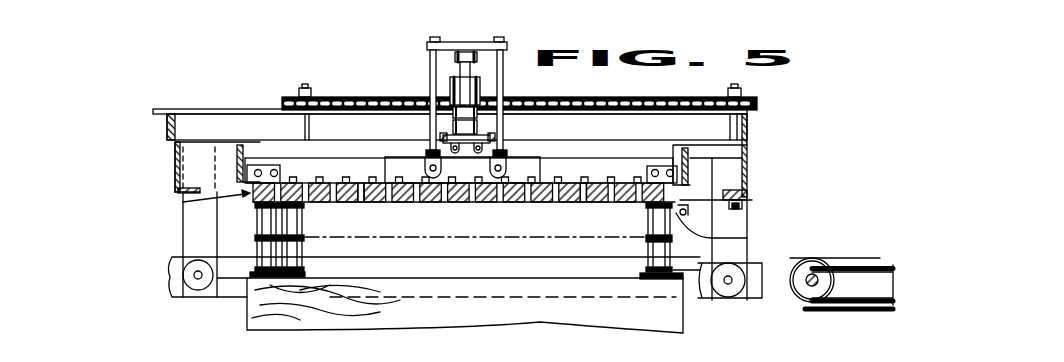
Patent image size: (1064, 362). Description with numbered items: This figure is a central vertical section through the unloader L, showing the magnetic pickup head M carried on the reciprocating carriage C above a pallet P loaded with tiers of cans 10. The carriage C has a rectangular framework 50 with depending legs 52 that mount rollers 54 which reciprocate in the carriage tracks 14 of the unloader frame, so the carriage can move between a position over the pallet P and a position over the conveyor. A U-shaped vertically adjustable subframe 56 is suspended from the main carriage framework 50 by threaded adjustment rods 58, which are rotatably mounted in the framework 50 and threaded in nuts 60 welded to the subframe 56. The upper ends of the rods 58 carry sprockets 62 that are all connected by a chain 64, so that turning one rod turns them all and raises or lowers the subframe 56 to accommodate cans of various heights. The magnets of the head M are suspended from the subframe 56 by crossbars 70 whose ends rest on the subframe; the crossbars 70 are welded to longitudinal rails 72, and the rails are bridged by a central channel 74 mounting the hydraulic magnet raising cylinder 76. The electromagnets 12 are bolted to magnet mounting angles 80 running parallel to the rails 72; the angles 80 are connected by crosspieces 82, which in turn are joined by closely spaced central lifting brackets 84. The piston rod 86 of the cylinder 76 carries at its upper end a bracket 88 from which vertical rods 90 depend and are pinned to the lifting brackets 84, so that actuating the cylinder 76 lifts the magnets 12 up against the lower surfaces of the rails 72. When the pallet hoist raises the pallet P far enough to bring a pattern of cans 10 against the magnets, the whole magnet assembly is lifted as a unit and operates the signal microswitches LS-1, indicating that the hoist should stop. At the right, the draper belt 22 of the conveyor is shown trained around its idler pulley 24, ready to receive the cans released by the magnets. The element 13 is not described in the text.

The unloader L is at (125, 85).
The carriage C is at (158, 127).
The rectangular framework 50 is at (217, 106).
The sprockets 62 is at (300, 87).
The threaded adjustment rods 58 is at (309, 125).
The crossbars 70 is at (177, 165).
The magnetic pickup head M is at (215, 198).
The depending legs 52 is at (183, 232).
The rollers 54 is at (196, 260).
The carriage tracks 14 is at (168, 277).
The pallet P is at (247, 320).
The piston rod 86 is at (473, 64).
The bracket 88 is at (427, 40).
The vertical rods 90 is at (430, 62).
The hydraulic magnet raising cylinder 76 is at (450, 90).
The central lifting brackets 84 is at (406, 158).
The central channel 74 is at (493, 138).
The magnet mounting angles 80 is at (575, 180).
The longitudinal rails 72 is at (618, 158).
The chain 64 is at (591, 97).
The vertically adjustable subframe 56 is at (705, 160).
The nuts 60 is at (743, 206).
The crosspieces 82 is at (361, 183).
The electromagnets 12 is at (527, 205).
The cans 10 is at (304, 249).
The signal microswitches LS-1 is at (747, 240).
The idler pulley 24 is at (818, 262).
The draper belt 22 is at (838, 312).
The base support 13 is at (270, 357).